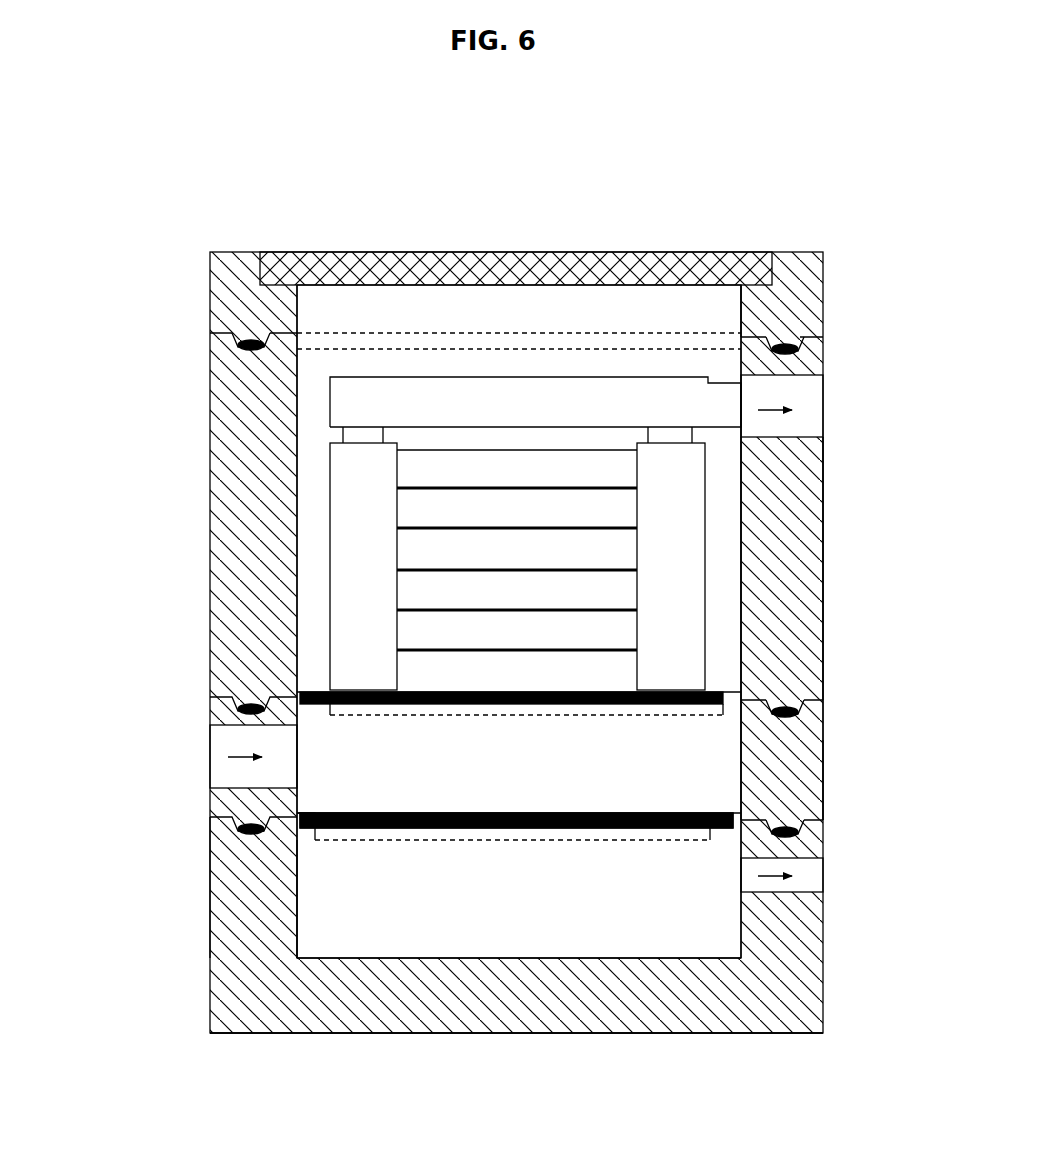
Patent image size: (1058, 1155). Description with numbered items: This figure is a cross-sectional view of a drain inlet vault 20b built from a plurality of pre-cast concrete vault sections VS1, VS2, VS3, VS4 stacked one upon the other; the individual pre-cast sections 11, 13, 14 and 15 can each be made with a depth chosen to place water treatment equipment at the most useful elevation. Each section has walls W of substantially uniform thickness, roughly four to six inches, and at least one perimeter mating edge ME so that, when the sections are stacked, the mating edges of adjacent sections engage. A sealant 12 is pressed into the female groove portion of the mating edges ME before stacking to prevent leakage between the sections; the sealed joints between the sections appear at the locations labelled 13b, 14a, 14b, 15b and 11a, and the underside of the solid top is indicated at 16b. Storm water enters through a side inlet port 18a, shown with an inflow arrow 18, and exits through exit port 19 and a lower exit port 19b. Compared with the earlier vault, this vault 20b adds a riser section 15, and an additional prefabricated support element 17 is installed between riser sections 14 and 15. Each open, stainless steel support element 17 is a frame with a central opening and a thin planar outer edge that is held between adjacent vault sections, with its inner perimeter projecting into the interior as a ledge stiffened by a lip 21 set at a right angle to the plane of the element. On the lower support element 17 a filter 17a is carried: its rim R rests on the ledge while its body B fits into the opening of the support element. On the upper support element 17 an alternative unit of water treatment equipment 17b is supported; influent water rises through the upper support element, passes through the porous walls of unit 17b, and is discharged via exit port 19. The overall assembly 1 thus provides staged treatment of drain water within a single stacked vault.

The substrate processing apparatus 1 is at (560, 320).
The pre-cast section 11 is at (350, 962).
The seal groove 11a is at (823, 858).
The sealant 12 is at (233, 705).
The pre-cast section 13 is at (212, 292).
The seal groove 13b is at (237, 346).
The riser section 14 is at (823, 745).
The seal groove 14a is at (795, 702).
The seal groove 14b is at (232, 830).
The riser section 15 is at (820, 537).
The seal groove 15b is at (790, 712).
The lid lower surface 16b is at (330, 287).
The prefabricated support element 17 is at (460, 703).
The filter 17a is at (515, 833).
The unit of water treatment equipment 17b is at (395, 378).
The gas supply 18 is at (160, 766).
The side inlet port 18a is at (218, 776).
The exit port 19 is at (822, 407).
The lower gas exhaust port 19b is at (825, 892).
The vault 20b is at (600, 1040).
The lip 21 is at (715, 705).
The body B is at (600, 839).
The rim R is at (300, 815).
The mating edge ME is at (212, 333).
The vault section VS1 is at (240, 925).
The vault section VS2 is at (815, 300).
The vault section VS3 is at (808, 785).
The vault section VS4 is at (820, 595).
The wall W is at (740, 308).